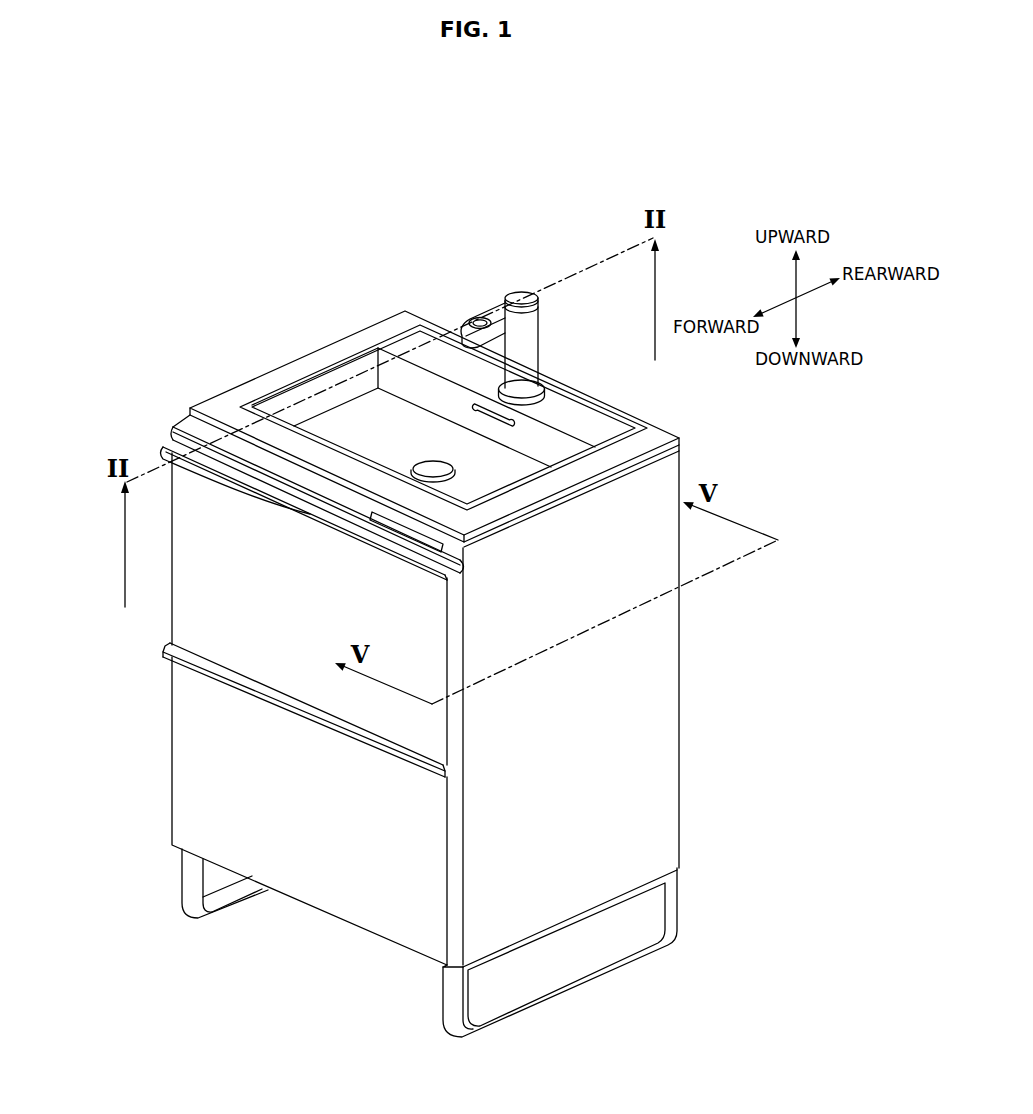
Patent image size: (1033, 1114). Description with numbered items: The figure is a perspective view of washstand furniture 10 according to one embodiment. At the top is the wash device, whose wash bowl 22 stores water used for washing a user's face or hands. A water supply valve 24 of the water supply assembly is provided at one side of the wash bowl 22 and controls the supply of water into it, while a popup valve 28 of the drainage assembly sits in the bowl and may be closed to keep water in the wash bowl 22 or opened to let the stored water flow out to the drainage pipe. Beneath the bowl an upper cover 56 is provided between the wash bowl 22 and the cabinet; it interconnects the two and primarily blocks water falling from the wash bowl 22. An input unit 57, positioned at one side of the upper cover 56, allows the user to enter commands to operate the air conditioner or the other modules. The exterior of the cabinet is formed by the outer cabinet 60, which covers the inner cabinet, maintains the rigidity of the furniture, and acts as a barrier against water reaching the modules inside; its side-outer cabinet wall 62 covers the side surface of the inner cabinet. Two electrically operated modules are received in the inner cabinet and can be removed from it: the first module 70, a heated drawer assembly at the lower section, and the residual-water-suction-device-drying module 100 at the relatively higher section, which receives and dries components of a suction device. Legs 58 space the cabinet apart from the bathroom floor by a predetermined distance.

The washstand furniture 10 is at (127, 231).
The wash bowl 22 is at (355, 387).
The water supply valve 24 is at (518, 347).
The popup valve 28 is at (435, 470).
The upper cover 56 is at (180, 428).
The input unit 57 is at (168, 456).
The legs 58 is at (663, 917).
The outer cabinet 60 is at (653, 543).
The side-outer cabinet wall 62 is at (653, 661).
The first module 70 is at (200, 750).
The residual-water-suction-device-drying module 100 is at (200, 588).